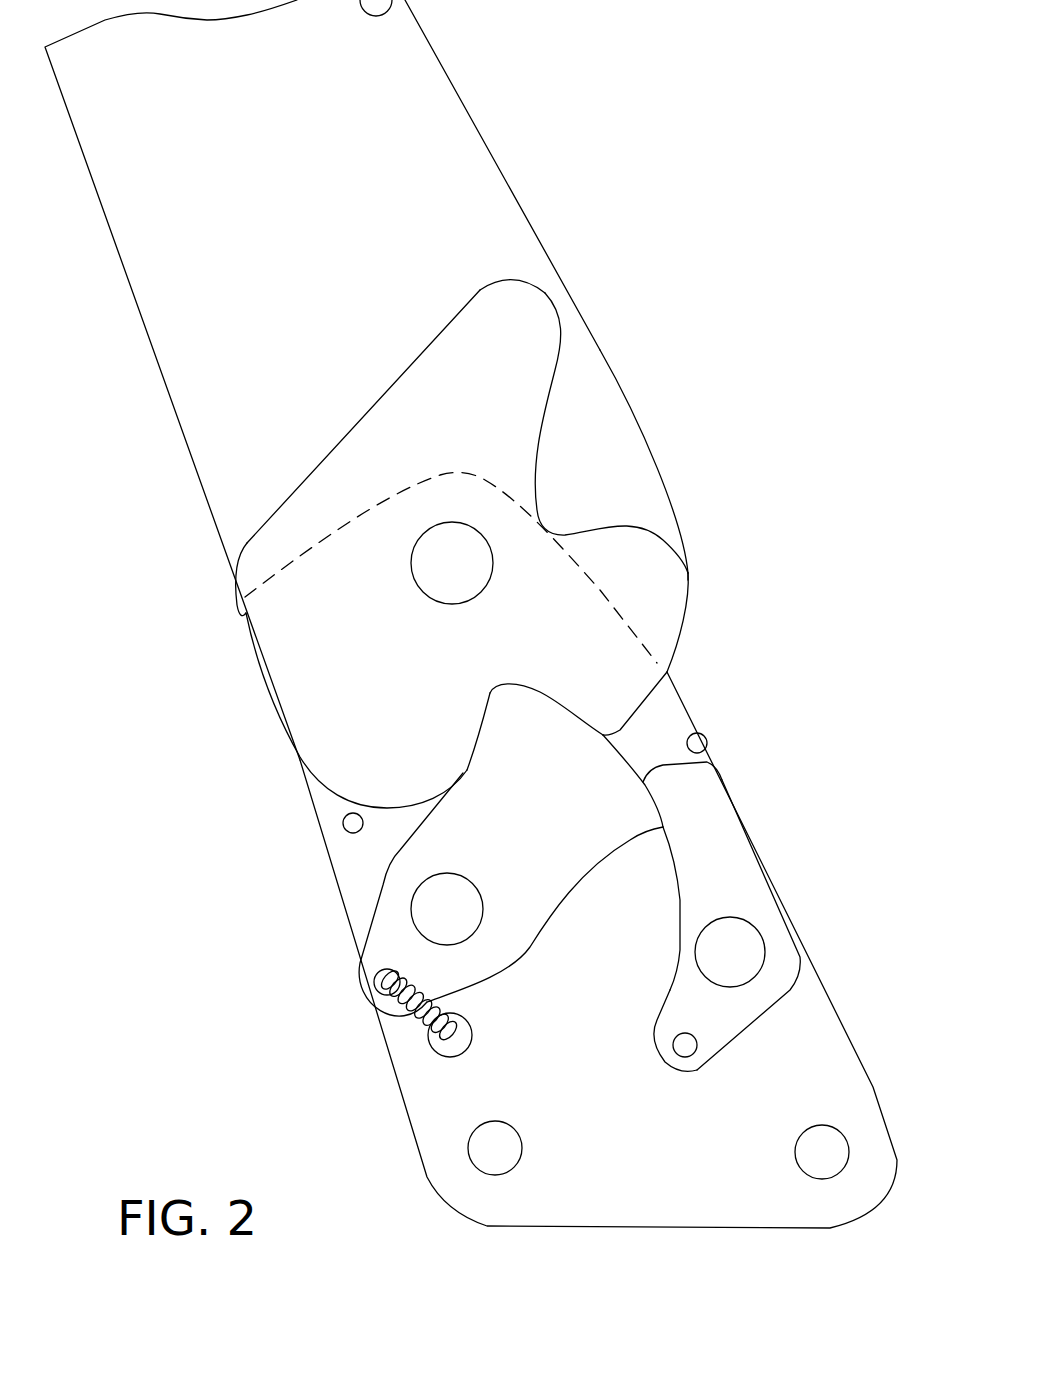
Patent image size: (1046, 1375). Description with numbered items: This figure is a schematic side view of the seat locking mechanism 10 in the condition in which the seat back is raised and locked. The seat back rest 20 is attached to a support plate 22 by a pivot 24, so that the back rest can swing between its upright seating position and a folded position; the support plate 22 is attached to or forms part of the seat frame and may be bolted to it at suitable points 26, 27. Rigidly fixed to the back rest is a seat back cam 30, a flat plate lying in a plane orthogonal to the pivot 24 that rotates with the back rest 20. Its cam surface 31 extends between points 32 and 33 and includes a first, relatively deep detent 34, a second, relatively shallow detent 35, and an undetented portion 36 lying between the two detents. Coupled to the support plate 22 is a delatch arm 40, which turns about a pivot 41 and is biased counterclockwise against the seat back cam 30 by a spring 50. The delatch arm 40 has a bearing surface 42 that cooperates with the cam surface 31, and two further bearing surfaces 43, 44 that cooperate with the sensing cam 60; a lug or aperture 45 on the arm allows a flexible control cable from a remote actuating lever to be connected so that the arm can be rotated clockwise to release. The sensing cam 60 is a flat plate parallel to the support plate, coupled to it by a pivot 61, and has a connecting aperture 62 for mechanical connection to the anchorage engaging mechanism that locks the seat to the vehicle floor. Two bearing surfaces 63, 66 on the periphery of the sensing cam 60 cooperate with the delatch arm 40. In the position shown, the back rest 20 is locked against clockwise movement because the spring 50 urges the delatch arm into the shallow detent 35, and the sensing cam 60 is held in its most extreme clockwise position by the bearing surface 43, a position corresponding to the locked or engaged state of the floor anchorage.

The tensioning ratchet assembly 10 is at (718, 272).
The seat back rest 20 is at (472, 147).
The support plate 22 is at (317, 797).
The pivot 24 is at (428, 580).
The bolting point 26 is at (483, 1157).
The bolting point 27 is at (815, 1137).
The seat back cam 30 is at (533, 347).
The cam surface 31 is at (690, 595).
The point 32 is at (545, 293).
The point 33 is at (302, 755).
The first detent 34 is at (538, 497).
The second detent 35 is at (487, 708).
The undetented portion 36 is at (670, 662).
The delatch arm 40 is at (490, 843).
The pivot 41 is at (460, 922).
The bearing surface 42 is at (483, 737).
The bearing surface 43 is at (613, 753).
The bearing surface 44 is at (587, 867).
The lug or aperture 45 is at (372, 987).
The spring 50 is at (433, 1002).
The sensing cam 60 is at (697, 886).
The pivot 61 is at (747, 955).
The connecting aperture 62 is at (688, 1055).
The bearing surface 63 is at (663, 987).
The bearing surface 66 is at (682, 767).